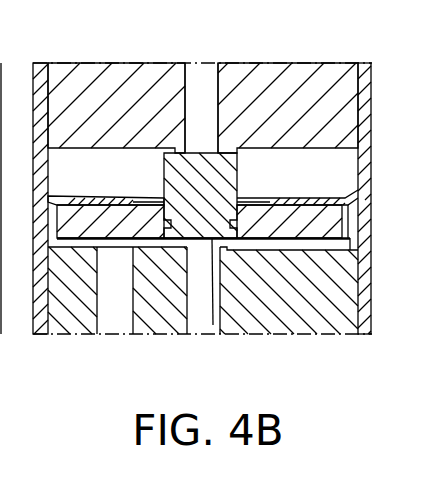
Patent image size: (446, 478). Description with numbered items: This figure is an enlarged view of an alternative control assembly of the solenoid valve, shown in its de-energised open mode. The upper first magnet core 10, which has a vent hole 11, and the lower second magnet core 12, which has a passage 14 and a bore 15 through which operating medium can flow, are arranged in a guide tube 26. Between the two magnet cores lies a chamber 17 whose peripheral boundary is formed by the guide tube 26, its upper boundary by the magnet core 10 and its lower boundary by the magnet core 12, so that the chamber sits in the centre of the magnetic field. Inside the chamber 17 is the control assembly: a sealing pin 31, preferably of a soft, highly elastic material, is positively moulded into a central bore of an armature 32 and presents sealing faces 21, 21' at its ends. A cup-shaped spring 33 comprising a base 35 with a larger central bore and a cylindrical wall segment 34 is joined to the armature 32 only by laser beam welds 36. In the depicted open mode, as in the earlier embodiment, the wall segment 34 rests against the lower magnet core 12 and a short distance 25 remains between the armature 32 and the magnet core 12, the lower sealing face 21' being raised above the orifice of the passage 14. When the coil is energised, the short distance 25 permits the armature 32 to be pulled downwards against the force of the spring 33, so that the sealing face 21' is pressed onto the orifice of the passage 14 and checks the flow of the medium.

The guide tube 26 is at (40, 92).
The first magnet core 10 is at (103, 97).
The vent hole 11 is at (212, 75).
The chamber 17 is at (290, 157).
The sealing face 21 is at (215, 131).
The sealing pin 31 is at (362, 137).
The armature 32 is at (362, 293).
The base 35 is at (225, 181).
The cup-shaped spring 33 is at (295, 199).
The cylindrical wall segment 34 is at (358, 223).
The laser beam welds 36 is at (292, 212).
The short distance 25 is at (287, 243).
The second magnet core 12 is at (330, 303).
The bore 15 is at (112, 320).
The passage 14 is at (195, 320).
The sealing face 21' is at (231, 309).